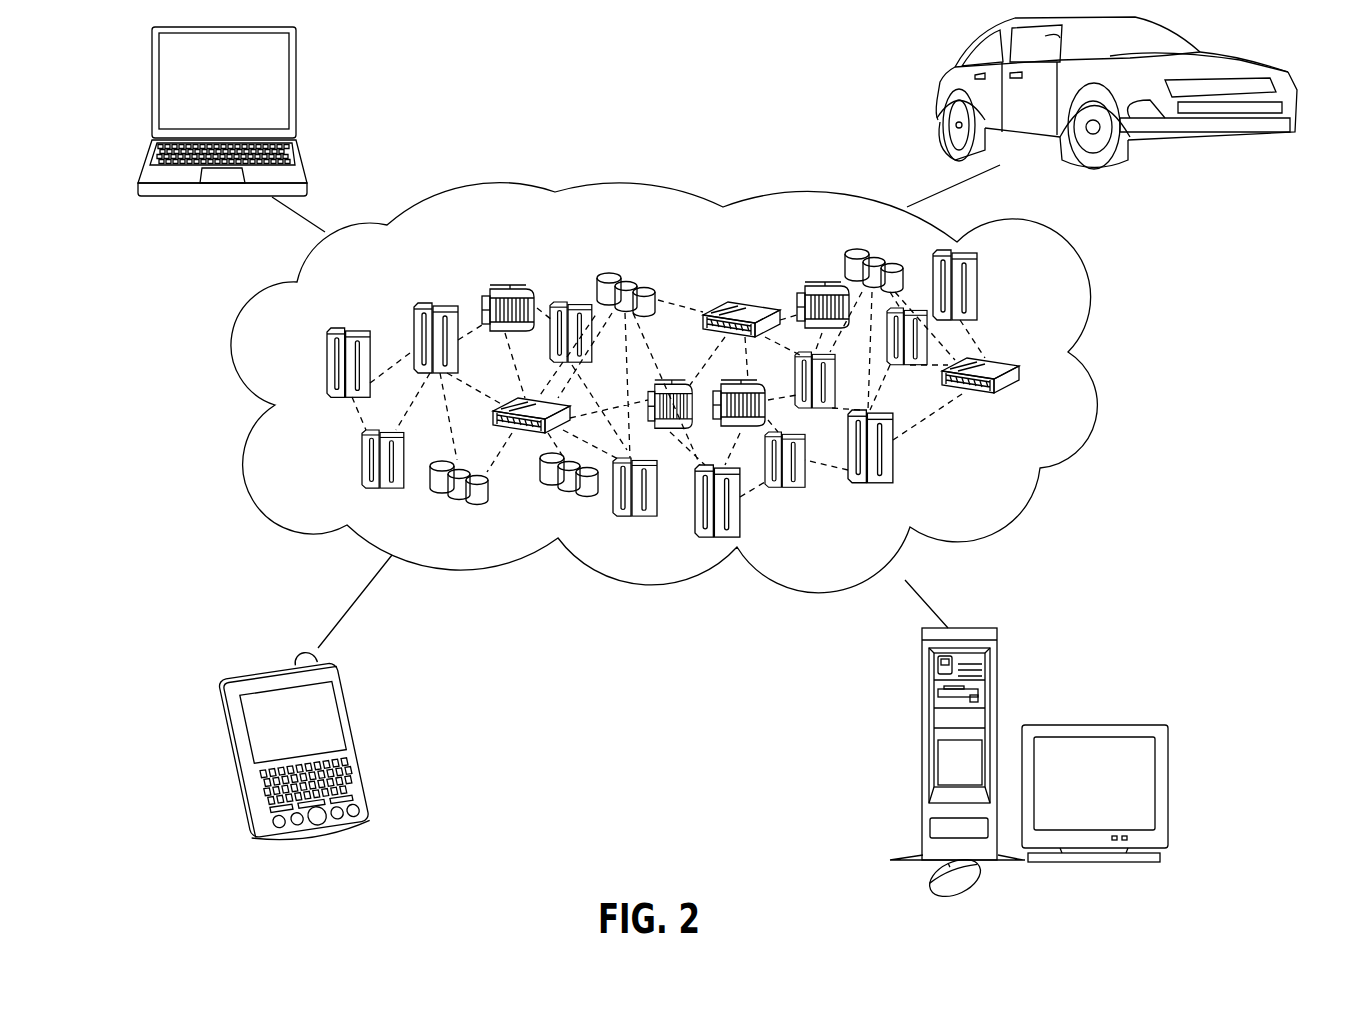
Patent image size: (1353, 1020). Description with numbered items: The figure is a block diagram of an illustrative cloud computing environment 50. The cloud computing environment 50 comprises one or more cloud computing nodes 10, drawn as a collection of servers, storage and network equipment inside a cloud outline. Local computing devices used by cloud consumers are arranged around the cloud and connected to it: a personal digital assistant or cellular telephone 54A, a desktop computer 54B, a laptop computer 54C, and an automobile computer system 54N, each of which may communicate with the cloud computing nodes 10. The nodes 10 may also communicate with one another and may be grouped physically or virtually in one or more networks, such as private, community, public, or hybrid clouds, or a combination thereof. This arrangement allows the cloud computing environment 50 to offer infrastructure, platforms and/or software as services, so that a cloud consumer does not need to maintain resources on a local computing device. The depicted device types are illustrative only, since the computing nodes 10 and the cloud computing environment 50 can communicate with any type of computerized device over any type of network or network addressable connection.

The cloud computing environment 50 is at (1095, 374).
The cloud computing nodes 10 is at (1002, 478).
The personal digital assistant (PDA) or cellular telephone 54A is at (345, 706).
The desktop computer 54B is at (922, 690).
The laptop computer 54C is at (296, 66).
The automobile computer system 54N is at (936, 83).